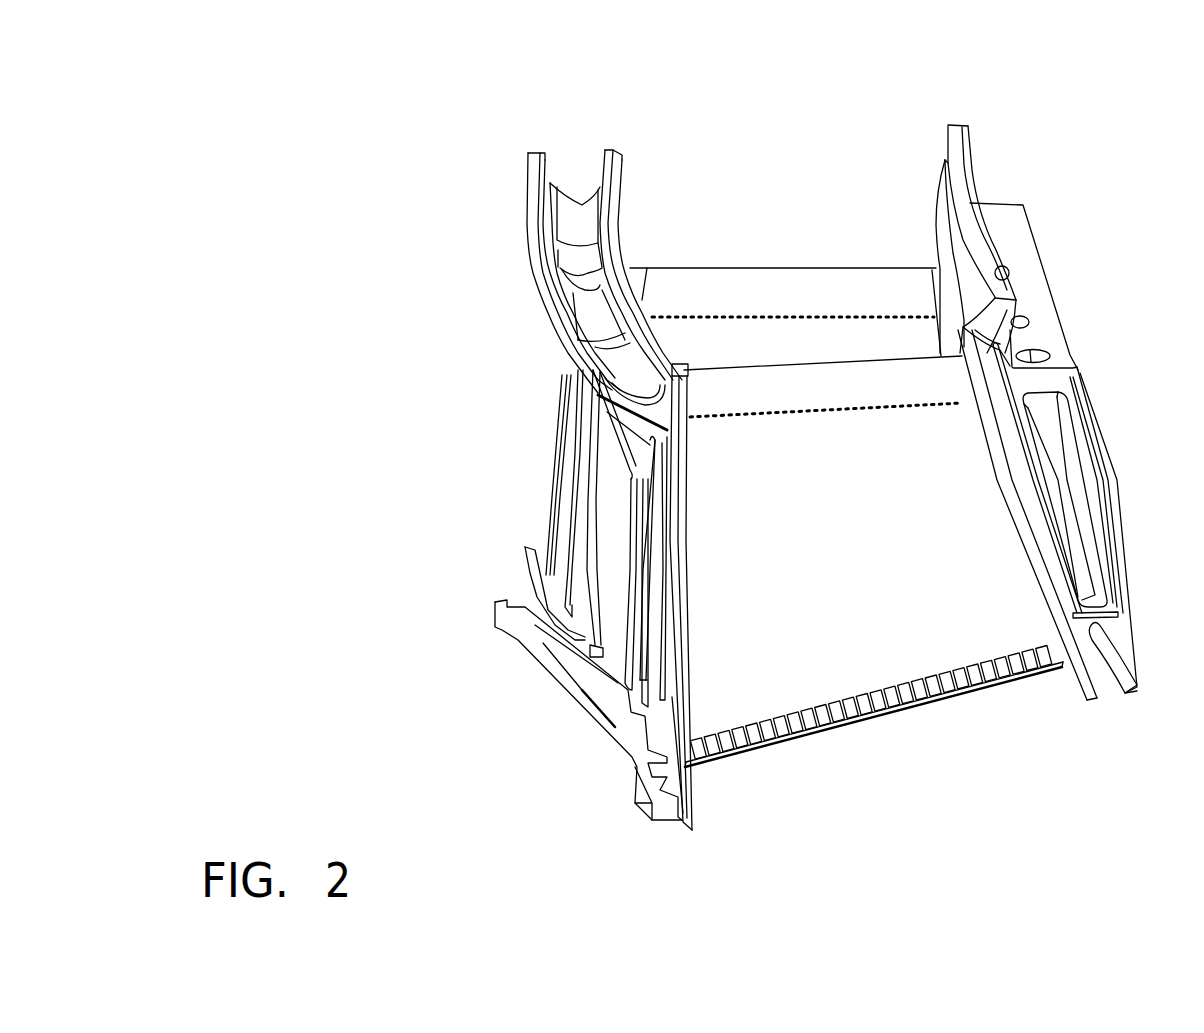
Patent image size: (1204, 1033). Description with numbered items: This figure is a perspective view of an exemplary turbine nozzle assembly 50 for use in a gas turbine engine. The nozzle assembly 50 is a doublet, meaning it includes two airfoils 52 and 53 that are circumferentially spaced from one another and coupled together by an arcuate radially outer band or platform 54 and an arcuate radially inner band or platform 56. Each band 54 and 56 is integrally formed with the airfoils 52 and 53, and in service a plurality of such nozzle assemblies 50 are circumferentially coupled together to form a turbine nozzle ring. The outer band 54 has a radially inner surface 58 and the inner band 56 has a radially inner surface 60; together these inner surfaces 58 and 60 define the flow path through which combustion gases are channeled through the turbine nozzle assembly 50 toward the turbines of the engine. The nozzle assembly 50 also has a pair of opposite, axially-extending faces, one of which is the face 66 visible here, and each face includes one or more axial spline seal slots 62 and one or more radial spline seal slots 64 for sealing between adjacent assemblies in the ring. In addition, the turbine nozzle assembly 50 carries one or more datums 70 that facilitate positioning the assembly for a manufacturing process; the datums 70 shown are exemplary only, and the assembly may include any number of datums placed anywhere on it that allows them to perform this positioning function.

The turbine nozzle assembly 50 is at (702, 114).
The airfoil 52 is at (838, 336).
The airfoil 53 is at (818, 603).
The radially outer band 54 is at (672, 823).
The radially inner band 56 is at (948, 128).
The radially inner surface of outer band 58 is at (722, 752).
The radially inner surface of inner band 60 is at (960, 330).
The axial spline seal slot 62 is at (665, 505).
The radial spline seal slot 64 is at (660, 382).
The axially-extending face 66 is at (680, 467).
The datum 70 is at (570, 262).